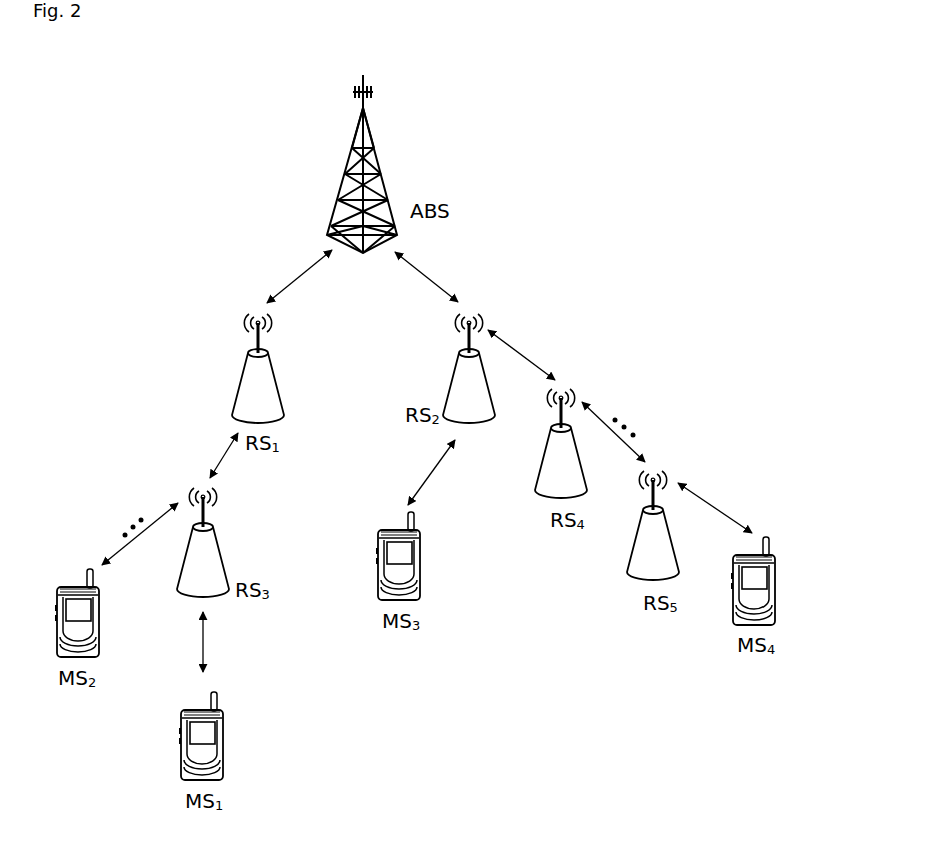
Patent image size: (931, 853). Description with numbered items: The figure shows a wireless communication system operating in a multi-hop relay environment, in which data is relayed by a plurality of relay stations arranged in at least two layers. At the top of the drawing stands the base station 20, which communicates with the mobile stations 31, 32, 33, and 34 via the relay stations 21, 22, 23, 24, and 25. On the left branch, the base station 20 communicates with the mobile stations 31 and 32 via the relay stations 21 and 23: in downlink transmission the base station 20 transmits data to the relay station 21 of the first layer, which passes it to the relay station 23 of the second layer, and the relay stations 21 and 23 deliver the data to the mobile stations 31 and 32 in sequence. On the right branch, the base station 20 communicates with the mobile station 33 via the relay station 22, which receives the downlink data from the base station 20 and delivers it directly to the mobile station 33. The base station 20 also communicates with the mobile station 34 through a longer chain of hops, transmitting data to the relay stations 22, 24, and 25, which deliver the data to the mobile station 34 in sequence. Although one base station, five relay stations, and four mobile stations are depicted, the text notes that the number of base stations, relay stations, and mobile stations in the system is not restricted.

The base station 20 is at (380, 155).
The relay station 21 is at (243, 380).
The relay station 22 is at (453, 380).
The relay station 23 is at (222, 550).
The relay station 24 is at (541, 471).
The relay station 25 is at (632, 553).
The mobile station 31 is at (224, 740).
The mobile station 32 is at (62, 588).
The mobile station 33 is at (421, 560).
The mobile station 34 is at (775, 585).